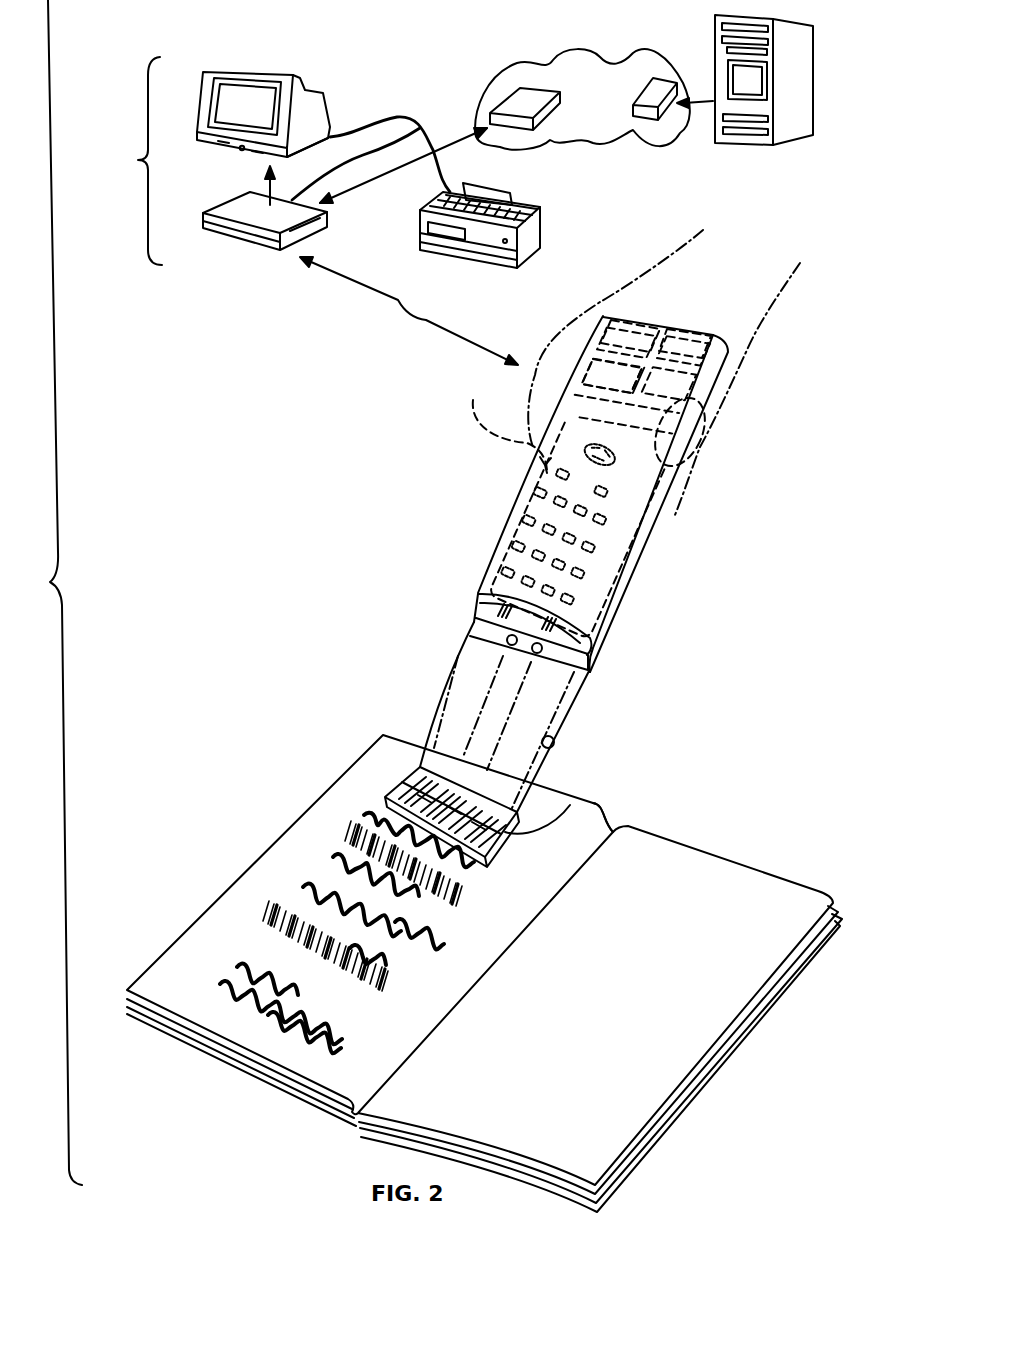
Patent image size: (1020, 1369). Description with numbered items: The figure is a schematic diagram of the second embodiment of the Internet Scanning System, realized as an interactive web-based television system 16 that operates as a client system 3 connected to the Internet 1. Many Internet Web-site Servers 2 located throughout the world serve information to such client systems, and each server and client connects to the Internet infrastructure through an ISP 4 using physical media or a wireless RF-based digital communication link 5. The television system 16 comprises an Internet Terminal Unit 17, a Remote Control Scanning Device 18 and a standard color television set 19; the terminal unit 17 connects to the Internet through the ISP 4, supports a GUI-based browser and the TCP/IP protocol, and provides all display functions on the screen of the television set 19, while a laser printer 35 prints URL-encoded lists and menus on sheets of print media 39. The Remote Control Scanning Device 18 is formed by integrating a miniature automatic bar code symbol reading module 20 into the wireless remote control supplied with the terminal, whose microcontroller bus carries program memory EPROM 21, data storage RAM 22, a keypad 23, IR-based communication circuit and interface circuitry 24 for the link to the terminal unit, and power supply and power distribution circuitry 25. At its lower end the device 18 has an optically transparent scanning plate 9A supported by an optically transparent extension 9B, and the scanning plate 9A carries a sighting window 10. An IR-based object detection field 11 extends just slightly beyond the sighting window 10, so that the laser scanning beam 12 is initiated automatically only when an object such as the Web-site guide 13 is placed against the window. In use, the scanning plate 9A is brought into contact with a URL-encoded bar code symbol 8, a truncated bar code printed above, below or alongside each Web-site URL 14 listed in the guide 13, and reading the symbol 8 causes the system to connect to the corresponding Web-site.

The Internet 1 is at (663, 62).
The Internet Web-site Server 2 is at (760, 148).
The client system 3 is at (58, 592).
The ISP 4 is at (543, 76).
The wireless digital communication link 5 is at (370, 181).
The URL-encoded bar code symbol 8 is at (395, 775).
The scanning plate 9A is at (570, 805).
The optically transparent extension 9B is at (557, 741).
The sighting window 10 is at (483, 860).
The IR-based object detection field 11 is at (458, 655).
The laser scanning beam 12 is at (447, 684).
The Web-site guide 13 is at (334, 1080).
The Web-site URL 14 is at (295, 912).
The interactive web-based television system 16 is at (129, 161).
The Internet Terminal Unit 17 is at (216, 236).
The Remote Control Scanning Device 18 is at (584, 548).
The color television set 19 is at (255, 71).
The automatic bar code symbol reading module 20 is at (637, 555).
The EPROM 21 is at (593, 378).
The RAM 22 is at (687, 410).
The keypad 23 is at (502, 421).
The IR-based communication circuit and interface circuitry 24 is at (640, 337).
The power supply and power distribution circuitry 25 is at (687, 343).
The Postscript laser printer 35 is at (533, 246).
The sheet of print media 39 is at (505, 183).